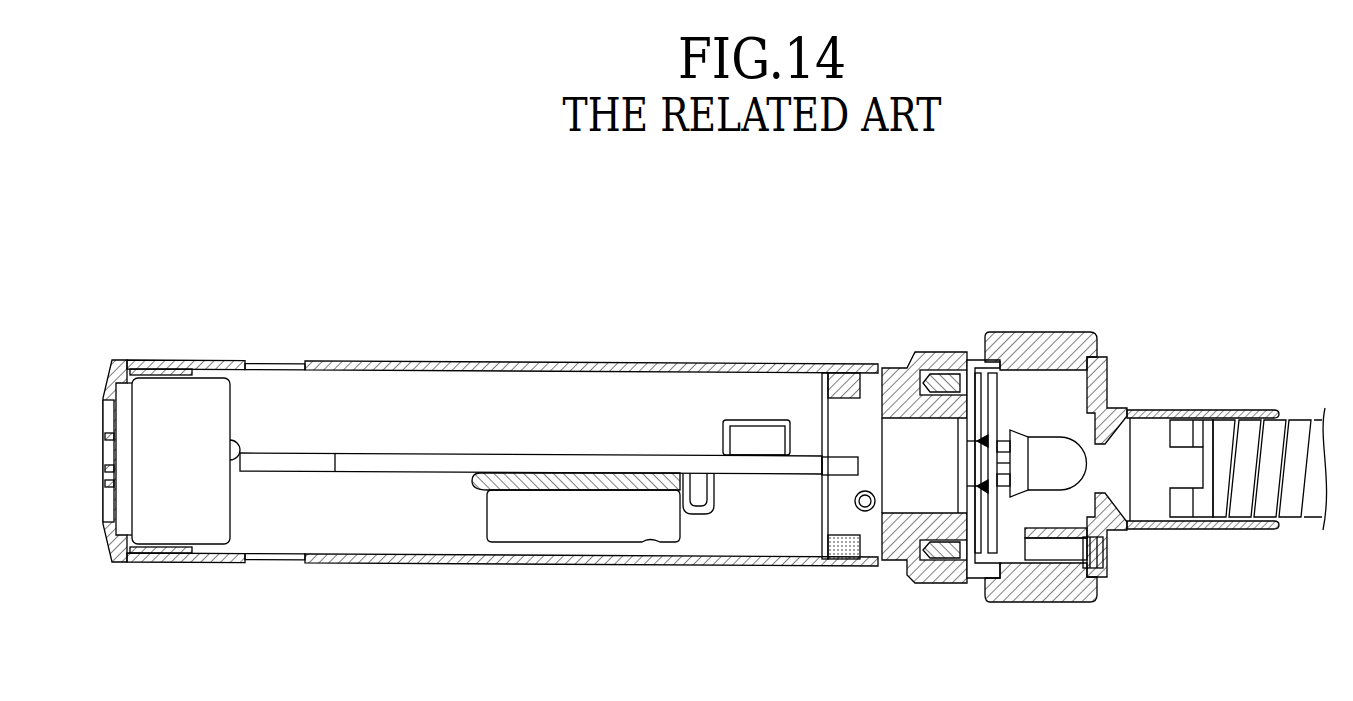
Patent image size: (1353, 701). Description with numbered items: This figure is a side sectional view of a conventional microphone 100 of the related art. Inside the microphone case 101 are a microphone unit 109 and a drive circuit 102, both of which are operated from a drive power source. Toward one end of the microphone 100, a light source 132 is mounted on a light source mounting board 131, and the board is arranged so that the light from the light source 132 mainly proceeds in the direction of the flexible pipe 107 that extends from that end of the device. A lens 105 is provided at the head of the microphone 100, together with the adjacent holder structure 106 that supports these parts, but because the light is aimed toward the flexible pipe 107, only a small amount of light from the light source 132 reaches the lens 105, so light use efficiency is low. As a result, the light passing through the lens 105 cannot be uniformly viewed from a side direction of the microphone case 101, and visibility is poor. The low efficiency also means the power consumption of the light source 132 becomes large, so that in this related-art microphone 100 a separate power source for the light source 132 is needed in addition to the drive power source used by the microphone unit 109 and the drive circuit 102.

The microphone 100 is at (684, 262).
The microphone case 101 is at (561, 362).
The drive circuit 102 is at (396, 461).
The lens 105 is at (1022, 334).
The holder body 106 is at (920, 584).
The flexible pipe 107 is at (1290, 424).
The microphone unit 109 is at (210, 402).
The light source mounting board 131 is at (994, 383).
The light source 132 is at (1046, 452).